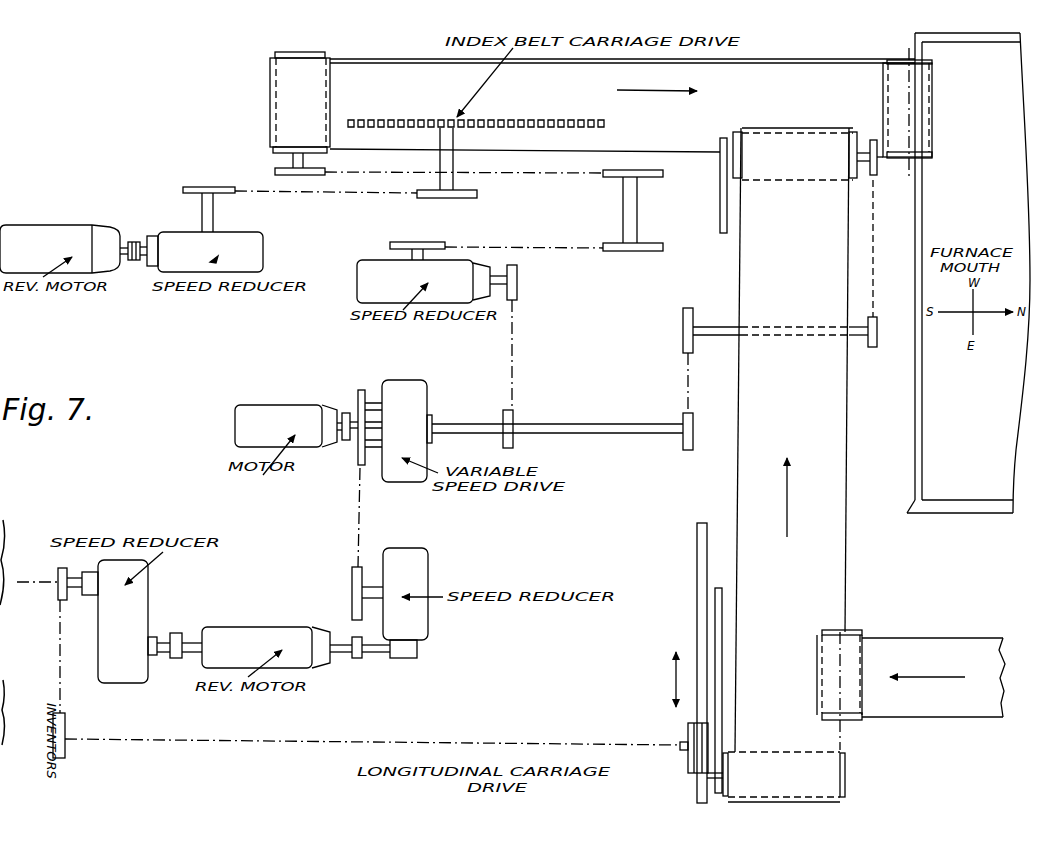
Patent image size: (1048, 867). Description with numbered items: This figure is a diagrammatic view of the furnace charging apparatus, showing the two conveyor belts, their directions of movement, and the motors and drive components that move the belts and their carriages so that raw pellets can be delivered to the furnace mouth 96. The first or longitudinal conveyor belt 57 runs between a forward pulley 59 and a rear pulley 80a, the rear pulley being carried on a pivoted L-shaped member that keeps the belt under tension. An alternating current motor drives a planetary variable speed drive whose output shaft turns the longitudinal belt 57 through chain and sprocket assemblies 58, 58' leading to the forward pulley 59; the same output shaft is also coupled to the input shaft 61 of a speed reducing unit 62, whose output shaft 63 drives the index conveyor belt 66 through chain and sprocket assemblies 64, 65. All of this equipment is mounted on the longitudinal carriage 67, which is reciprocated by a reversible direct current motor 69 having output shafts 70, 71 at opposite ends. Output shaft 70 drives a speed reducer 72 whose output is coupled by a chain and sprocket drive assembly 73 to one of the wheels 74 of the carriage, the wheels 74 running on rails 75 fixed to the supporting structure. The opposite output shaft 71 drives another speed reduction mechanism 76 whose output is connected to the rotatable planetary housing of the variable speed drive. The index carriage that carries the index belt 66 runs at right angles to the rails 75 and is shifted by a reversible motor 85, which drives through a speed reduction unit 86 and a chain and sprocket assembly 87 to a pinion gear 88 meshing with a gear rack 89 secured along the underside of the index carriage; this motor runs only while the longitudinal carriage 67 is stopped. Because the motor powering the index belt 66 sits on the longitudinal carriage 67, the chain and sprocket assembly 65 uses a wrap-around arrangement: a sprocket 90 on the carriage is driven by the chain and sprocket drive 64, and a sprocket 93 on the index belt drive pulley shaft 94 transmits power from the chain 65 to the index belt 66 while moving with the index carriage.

The longitudinal conveyor belt 57 is at (847, 578).
The chain and sprocket assembly 58 is at (740, 379).
The chain and sprocket assembly 58' is at (832, 263).
The forward pulley 59 is at (733, 130).
The input shaft 61 is at (518, 279).
The speed reducing unit 62 is at (357, 275).
The output shaft 63 is at (418, 253).
The chain and sprocket assembly 64 is at (562, 242).
The chain and sprocket assembly 65 is at (553, 175).
The index conveyor belt 66 is at (818, 70).
The longitudinal carriage 67 is at (715, 628).
The reversible direct current motor 69 is at (257, 615).
The output shaft 70 is at (195, 650).
The output shaft 71 is at (382, 647).
The speed reducer 72 is at (150, 583).
The chain and sprocket drive assembly 73 is at (60, 703).
The wheels 74 is at (687, 732).
The rails 75 is at (697, 562).
The speed reduction mechanism 76 is at (417, 630).
The rear pulley 80a is at (845, 782).
The reversible motor 85 is at (73, 216).
The speed reduction unit 86 is at (182, 222).
The chain and sprocket assembly 87 is at (323, 193).
The pinion gear 88 is at (437, 128).
The gear rack 89 is at (390, 127).
The sprocket 90 is at (666, 174).
The sprocket 93 is at (275, 171).
The index belt drive pulley shaft 94 is at (290, 108).
The furnace mouth 96 is at (993, 395).